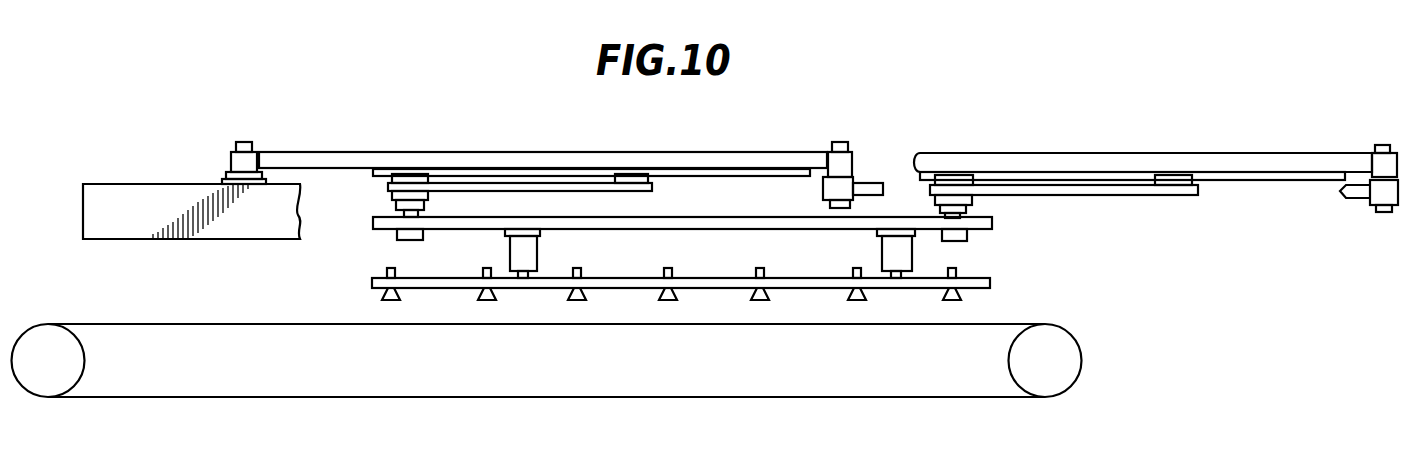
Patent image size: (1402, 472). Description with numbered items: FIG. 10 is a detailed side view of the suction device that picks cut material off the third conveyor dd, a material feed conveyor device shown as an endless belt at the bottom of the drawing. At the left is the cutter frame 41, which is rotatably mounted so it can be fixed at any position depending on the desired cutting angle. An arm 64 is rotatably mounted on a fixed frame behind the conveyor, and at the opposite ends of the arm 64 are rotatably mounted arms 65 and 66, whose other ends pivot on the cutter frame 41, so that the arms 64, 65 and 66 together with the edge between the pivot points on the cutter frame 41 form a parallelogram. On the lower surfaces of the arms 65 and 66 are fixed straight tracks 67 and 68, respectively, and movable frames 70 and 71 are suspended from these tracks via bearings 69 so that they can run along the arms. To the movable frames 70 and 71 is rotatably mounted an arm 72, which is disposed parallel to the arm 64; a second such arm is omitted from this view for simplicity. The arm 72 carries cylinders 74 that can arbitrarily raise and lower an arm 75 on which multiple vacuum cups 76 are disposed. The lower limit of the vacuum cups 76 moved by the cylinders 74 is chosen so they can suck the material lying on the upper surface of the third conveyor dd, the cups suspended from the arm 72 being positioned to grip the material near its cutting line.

The cutter frame 41 is at (156, 184).
The arm 64 is at (870, 180).
The arm 65 is at (1069, 153).
The arm 66 is at (594, 152).
The straight track 67 is at (1231, 181).
The straight track 68 is at (792, 182).
The bearings 69 is at (408, 172).
The movable frame 70 is at (1101, 196).
The movable frame 71 is at (652, 189).
The arm 72 is at (636, 232).
The cylinders 74 is at (538, 245).
The arm 75 is at (980, 278).
The vacuum cups 76 is at (961, 297).
The material feed conveyor device (third conveyor) dd is at (700, 376).